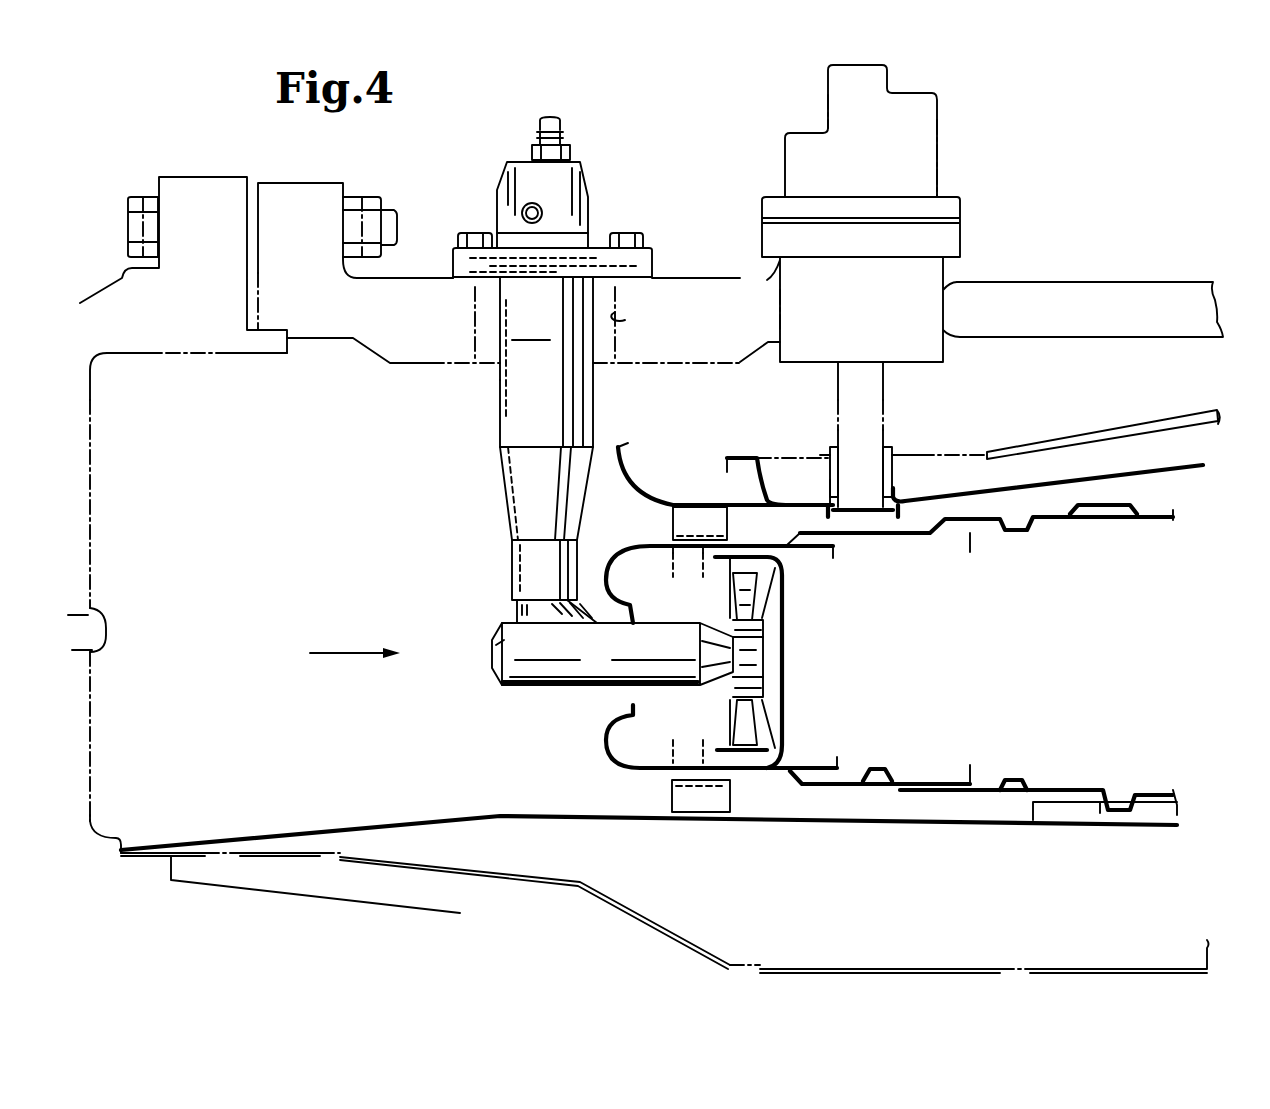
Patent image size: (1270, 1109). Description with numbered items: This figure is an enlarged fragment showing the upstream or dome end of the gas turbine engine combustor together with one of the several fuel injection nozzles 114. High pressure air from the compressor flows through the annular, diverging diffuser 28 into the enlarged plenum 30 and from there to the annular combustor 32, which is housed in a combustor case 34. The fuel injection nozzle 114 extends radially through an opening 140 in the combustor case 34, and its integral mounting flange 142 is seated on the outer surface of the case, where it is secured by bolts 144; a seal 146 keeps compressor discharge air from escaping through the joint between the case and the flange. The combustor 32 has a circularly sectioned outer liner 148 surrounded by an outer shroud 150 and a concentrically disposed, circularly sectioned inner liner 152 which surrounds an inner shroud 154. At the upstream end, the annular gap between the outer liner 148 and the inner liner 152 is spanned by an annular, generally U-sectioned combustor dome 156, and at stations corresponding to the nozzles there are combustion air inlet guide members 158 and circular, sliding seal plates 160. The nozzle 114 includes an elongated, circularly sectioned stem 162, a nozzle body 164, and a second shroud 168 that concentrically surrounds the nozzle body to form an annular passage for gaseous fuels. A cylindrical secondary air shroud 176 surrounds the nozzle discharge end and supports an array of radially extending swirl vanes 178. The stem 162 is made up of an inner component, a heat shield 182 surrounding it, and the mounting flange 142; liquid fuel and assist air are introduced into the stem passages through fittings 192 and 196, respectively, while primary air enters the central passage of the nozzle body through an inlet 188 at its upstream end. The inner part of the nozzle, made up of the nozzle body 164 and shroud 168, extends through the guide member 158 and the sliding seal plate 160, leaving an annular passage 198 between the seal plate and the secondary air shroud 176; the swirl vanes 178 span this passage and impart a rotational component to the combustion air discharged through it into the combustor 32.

The diffuser 28 is at (100, 300).
The plenum 30 is at (210, 473).
The combustor 32 is at (1045, 428).
The combustor case 34 is at (1062, 282).
The fuel injection nozzle 114 is at (487, 410).
The opening 140 is at (625, 320).
The mounting flange 142 is at (652, 262).
The bolts 144 is at (620, 232).
The seal 146 is at (453, 272).
The outer liner 148 is at (1110, 505).
The outer shroud 150 is at (1168, 467).
The inner liner 152 is at (1057, 792).
The inner shroud 154 is at (1070, 830).
The combustor dome 156 is at (650, 533).
The combustion air inlet guide member 158 is at (600, 737).
The sliding seal plate 160 is at (786, 599).
The stem 162 is at (556, 423).
The nozzle body 164 is at (500, 697).
The second shroud 168 is at (636, 656).
The secondary air shroud 176 is at (770, 663).
The swirl vanes 178 is at (768, 629).
The heat shield 182 is at (552, 369).
The inlet 188 is at (492, 652).
The fitting 192 is at (522, 207).
The fitting 196 is at (557, 123).
The annular passage 198 is at (738, 630).